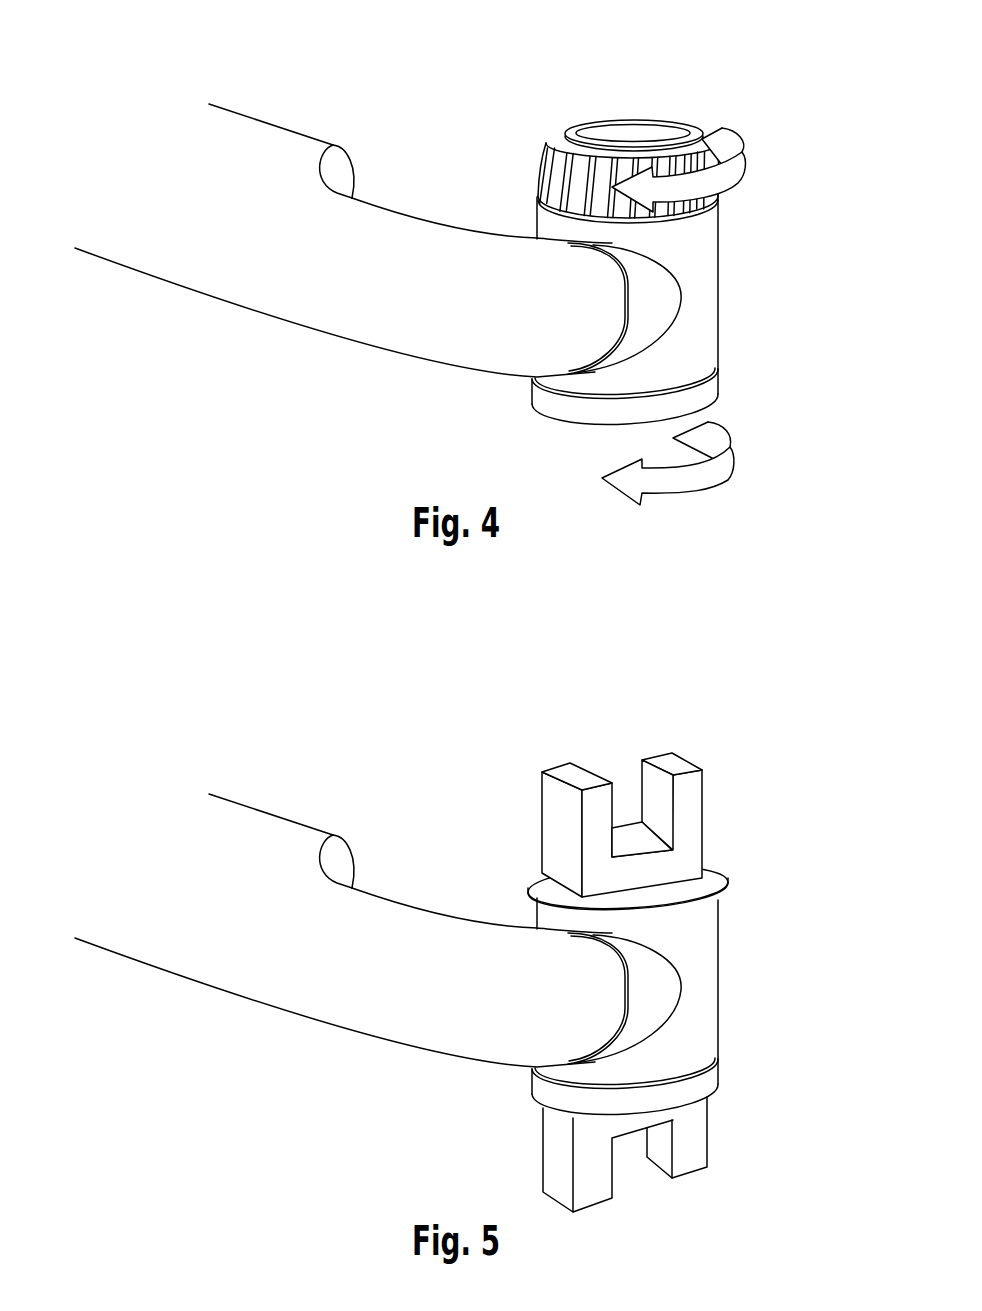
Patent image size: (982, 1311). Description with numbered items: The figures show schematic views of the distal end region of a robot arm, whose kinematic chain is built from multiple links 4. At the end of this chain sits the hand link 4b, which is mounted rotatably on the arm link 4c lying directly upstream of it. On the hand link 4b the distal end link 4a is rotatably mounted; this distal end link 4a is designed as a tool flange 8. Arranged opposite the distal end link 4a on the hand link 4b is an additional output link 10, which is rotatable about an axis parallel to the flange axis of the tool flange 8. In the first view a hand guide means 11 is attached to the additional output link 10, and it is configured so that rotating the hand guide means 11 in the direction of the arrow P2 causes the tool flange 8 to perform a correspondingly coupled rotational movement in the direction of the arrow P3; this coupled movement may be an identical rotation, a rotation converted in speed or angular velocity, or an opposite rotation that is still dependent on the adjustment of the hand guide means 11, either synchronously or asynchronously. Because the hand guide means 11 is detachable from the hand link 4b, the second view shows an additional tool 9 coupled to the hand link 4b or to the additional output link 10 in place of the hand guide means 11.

In FIG. 4, the links 4 is at (461, 279).
In FIG. 5, the links 4 is at (461, 951).
In FIG. 4, the distal end link 4a is at (560, 410).
In FIG. 5, the distal end link 4a is at (703, 1082).
In FIG. 4, the hand link 4b is at (703, 270).
In FIG. 5, the hand link 4b is at (703, 962).
In FIG. 4, the arm link 4c is at (402, 237).
In FIG. 5, the arm link 4c is at (402, 927).
In FIG. 4, the tool flange 8 is at (710, 385).
In FIG. 5, the tool flange 8 is at (716, 1089).
In FIG. 5, the additional tool 9 is at (690, 858).
In FIG. 4, the additional output link 10 is at (672, 114).
In FIG. 5, the additional output link 10 is at (707, 889).
In FIG. 4, the hand guide means 11 is at (622, 183).
In FIG. 4, the arrow P2 is at (744, 164).
In FIG. 4, the arrow P3 is at (733, 457).